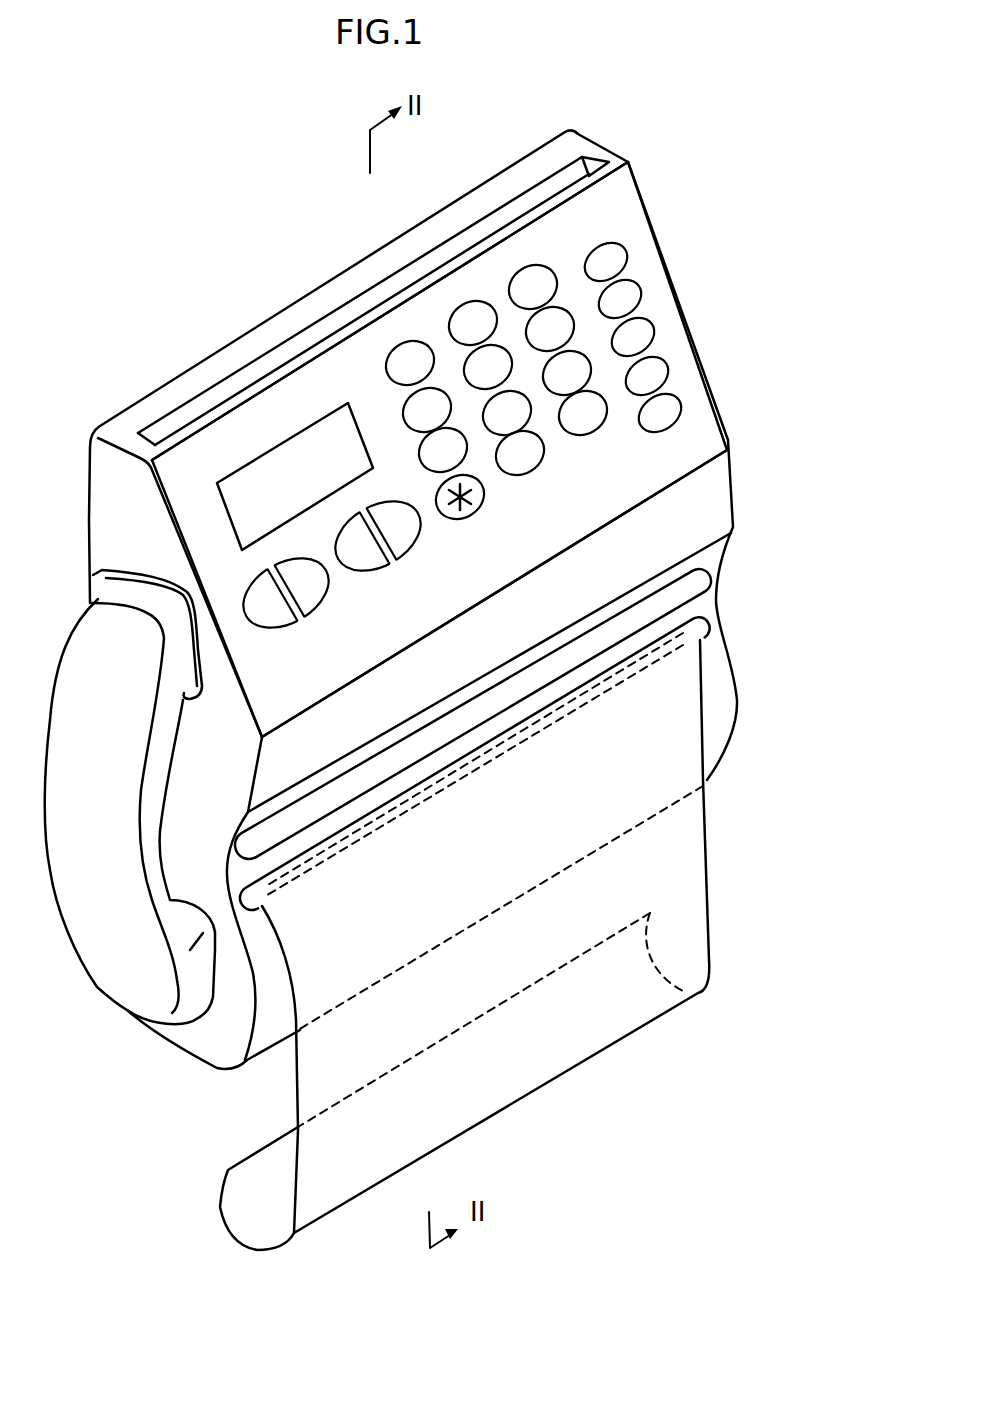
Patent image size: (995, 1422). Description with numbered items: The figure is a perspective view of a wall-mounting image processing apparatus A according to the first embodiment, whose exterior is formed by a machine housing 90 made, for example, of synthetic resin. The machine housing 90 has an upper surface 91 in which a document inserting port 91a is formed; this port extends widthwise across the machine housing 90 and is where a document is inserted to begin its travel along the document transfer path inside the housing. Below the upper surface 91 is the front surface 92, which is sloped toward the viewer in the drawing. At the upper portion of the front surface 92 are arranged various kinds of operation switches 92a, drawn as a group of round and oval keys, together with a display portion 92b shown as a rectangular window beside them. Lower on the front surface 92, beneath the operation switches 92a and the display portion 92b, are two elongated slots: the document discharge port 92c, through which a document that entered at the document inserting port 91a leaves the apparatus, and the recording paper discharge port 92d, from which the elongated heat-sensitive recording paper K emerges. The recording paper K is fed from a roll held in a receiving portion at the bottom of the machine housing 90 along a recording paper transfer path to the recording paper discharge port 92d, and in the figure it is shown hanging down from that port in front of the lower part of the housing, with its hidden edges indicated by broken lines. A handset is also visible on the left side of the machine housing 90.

The machine housing 90 is at (656, 214).
The upper surface 91 is at (469, 213).
The document inserting port 91a is at (575, 168).
The front surface 92 is at (700, 423).
The operation switches 92a is at (567, 323).
The display portion 92b is at (237, 488).
The document discharge port 92c is at (695, 570).
The recording paper discharge port 92d is at (698, 617).
The heat-sensitive recording paper K is at (707, 837).
The facsimile apparatus A is at (203, 291).